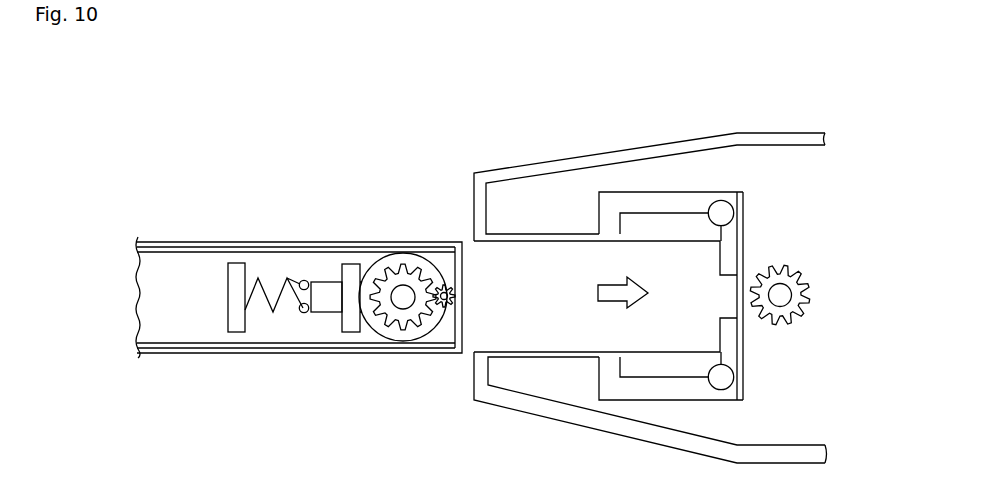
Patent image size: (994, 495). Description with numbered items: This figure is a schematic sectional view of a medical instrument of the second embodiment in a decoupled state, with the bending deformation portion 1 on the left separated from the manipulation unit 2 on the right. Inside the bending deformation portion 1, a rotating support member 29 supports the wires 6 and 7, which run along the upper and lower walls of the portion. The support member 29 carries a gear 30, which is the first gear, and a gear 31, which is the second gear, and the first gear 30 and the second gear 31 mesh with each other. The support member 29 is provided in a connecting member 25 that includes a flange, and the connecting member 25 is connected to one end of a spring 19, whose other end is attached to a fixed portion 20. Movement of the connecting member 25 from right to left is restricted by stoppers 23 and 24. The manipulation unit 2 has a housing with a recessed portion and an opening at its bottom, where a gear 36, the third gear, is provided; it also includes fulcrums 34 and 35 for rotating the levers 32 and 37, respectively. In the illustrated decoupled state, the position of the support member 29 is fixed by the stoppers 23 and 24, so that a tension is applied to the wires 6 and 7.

The bending deformation portion 1 is at (137, 97).
The manipulation unit 2 is at (472, 97).
The wire 6 is at (166, 246).
The wire 7 is at (166, 357).
The spring 19 is at (266, 284).
The fixed portion 20 is at (238, 325).
The stopper 23 is at (300, 278).
The stopper 24 is at (304, 313).
The connecting member 25 is at (349, 265).
The support member 29 is at (383, 262).
The gear 30 is at (423, 265).
The gear 31 is at (443, 305).
The lever 32 is at (624, 200).
The fulcrum 34 is at (722, 210).
The fulcrum 35 is at (720, 390).
The gear 36 is at (795, 268).
The lever 37 is at (626, 390).